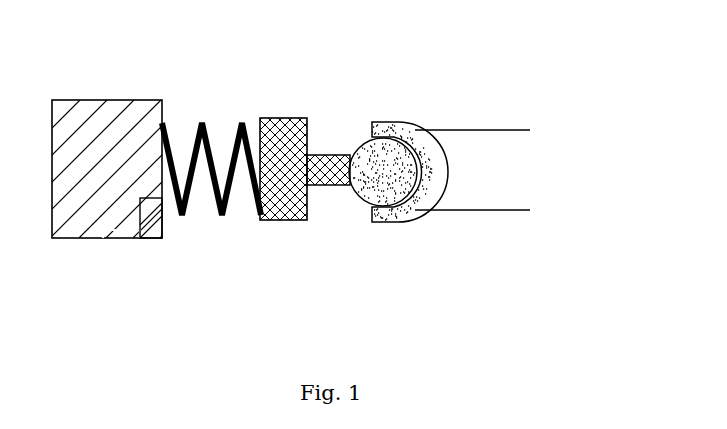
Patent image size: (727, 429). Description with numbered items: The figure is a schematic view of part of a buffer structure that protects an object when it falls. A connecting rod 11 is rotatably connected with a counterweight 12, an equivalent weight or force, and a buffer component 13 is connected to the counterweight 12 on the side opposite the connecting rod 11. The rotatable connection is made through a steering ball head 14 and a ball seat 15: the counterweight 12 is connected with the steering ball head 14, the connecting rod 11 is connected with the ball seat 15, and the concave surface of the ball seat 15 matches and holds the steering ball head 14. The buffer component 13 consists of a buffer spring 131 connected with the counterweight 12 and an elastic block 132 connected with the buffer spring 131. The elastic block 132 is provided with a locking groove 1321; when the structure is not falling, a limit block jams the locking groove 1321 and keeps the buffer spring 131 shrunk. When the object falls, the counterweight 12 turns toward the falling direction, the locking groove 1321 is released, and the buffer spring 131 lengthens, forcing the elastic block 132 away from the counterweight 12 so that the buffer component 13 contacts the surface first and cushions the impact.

The connecting rod 11 is at (480, 170).
The counterweight 12 is at (313, 185).
The buffer component 13 is at (173, 104).
The buffer spring 131 is at (203, 193).
The elastic block 132 is at (96, 203).
The locking groove 1321 is at (120, 232).
The steering ball head 14 is at (417, 140).
The ball seat 15 is at (388, 120).